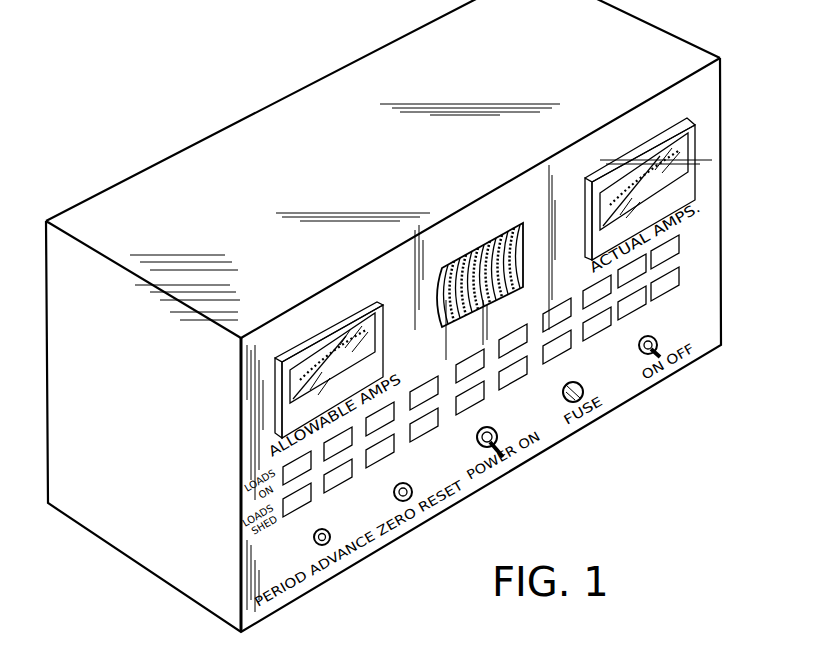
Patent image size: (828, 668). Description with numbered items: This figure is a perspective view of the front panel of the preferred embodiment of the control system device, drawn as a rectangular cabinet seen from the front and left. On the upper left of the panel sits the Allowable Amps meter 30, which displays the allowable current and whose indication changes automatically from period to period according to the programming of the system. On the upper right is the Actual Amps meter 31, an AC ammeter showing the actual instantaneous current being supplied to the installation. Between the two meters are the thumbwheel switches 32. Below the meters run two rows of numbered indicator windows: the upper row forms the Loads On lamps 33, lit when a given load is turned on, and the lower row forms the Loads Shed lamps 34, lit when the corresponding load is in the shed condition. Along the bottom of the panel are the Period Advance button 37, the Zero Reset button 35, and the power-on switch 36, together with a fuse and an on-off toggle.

The Allowable Amps meter 30 is at (352, 318).
The Actual Amps meter 31 is at (645, 143).
The thumbwheel switches 32 is at (463, 255).
The Loads On lamps 33 is at (680, 246).
The Loads Shed lamps 34 is at (683, 279).
The Zero Reset button 35 is at (392, 493).
The power-on switch 36 is at (477, 443).
The Period Advance button 37 is at (312, 538).